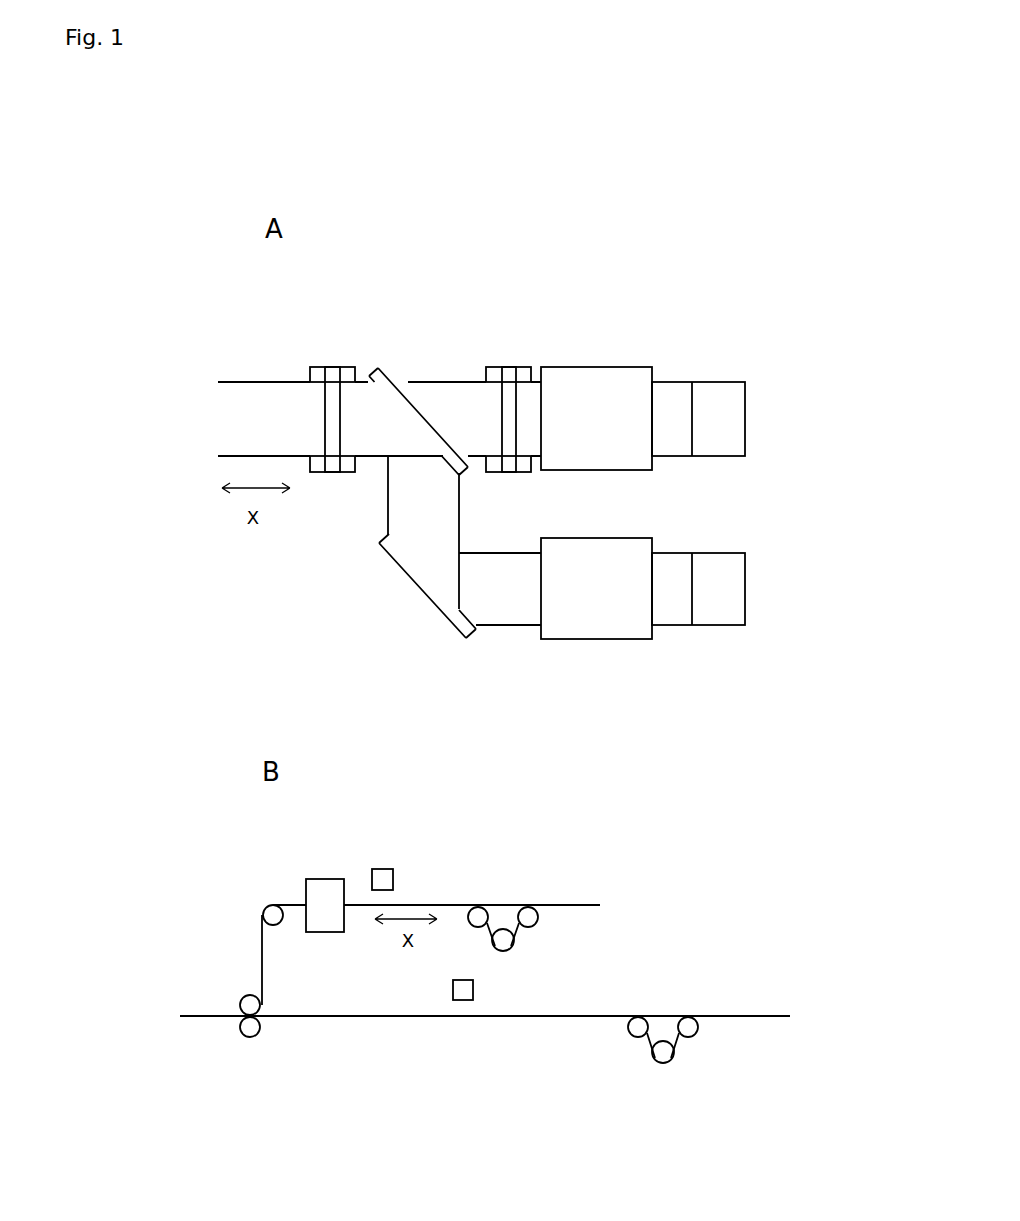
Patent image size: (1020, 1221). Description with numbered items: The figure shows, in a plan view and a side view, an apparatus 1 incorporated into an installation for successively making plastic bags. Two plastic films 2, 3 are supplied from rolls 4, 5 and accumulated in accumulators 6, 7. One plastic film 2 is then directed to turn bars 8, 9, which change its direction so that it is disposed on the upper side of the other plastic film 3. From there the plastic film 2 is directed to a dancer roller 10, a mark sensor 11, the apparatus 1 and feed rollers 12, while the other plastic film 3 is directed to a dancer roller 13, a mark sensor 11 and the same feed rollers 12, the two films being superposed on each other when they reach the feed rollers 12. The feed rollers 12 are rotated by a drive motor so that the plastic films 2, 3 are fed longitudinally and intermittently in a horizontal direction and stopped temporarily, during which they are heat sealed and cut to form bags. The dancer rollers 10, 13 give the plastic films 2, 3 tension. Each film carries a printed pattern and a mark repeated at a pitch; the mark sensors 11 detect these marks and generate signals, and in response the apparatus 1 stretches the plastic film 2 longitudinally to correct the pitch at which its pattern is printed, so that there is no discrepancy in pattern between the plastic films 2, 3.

The apparatus 1 is at (327, 887).
The plastic film 2 is at (500, 617).
The plastic film 3 is at (467, 392).
The roll 4 is at (715, 612).
The roll 5 is at (722, 392).
The accumulator 6 is at (600, 625).
The accumulator 7 is at (596, 378).
The turn bar 8 is at (463, 636).
The turn bar 9 is at (372, 370).
The dancer roller 10 is at (333, 377).
The mark sensor 11 is at (383, 873).
The feed rollers 12 is at (247, 997).
The dancer roller 13 is at (509, 375).